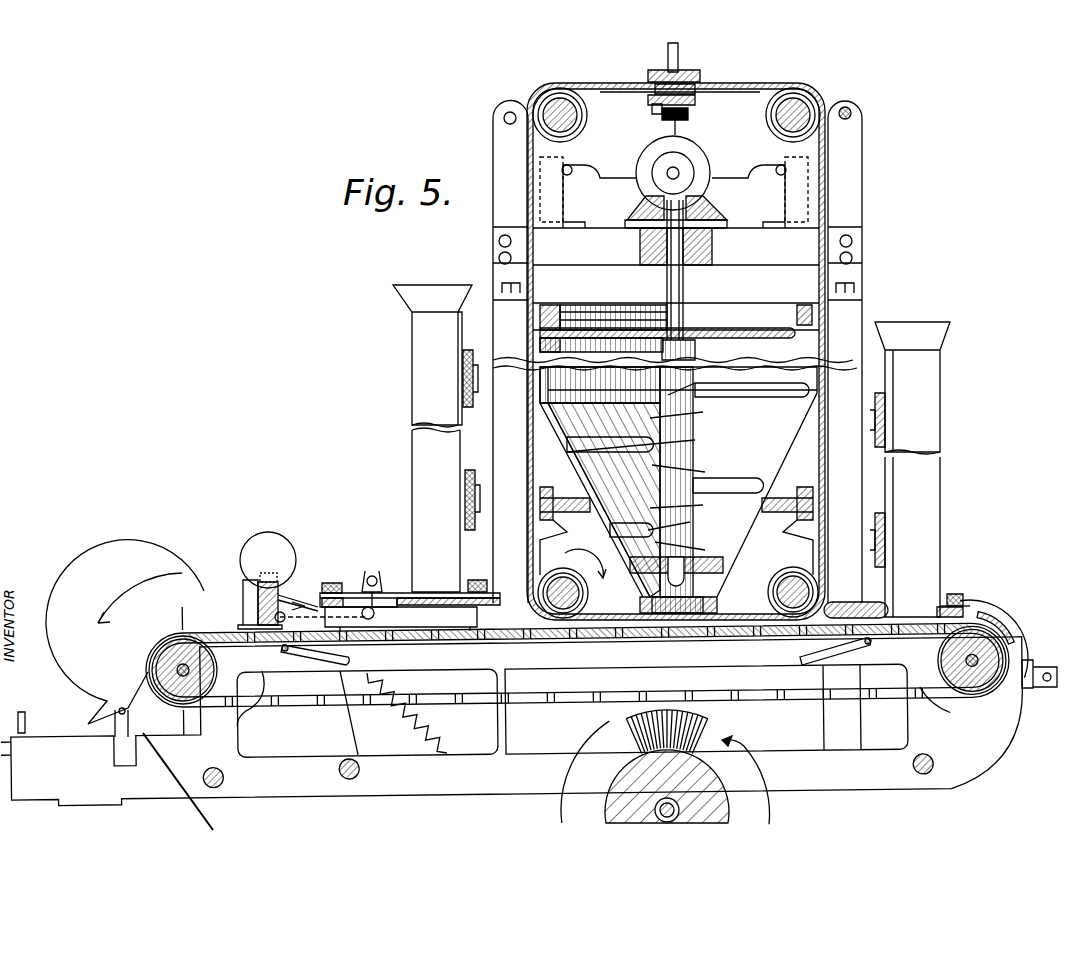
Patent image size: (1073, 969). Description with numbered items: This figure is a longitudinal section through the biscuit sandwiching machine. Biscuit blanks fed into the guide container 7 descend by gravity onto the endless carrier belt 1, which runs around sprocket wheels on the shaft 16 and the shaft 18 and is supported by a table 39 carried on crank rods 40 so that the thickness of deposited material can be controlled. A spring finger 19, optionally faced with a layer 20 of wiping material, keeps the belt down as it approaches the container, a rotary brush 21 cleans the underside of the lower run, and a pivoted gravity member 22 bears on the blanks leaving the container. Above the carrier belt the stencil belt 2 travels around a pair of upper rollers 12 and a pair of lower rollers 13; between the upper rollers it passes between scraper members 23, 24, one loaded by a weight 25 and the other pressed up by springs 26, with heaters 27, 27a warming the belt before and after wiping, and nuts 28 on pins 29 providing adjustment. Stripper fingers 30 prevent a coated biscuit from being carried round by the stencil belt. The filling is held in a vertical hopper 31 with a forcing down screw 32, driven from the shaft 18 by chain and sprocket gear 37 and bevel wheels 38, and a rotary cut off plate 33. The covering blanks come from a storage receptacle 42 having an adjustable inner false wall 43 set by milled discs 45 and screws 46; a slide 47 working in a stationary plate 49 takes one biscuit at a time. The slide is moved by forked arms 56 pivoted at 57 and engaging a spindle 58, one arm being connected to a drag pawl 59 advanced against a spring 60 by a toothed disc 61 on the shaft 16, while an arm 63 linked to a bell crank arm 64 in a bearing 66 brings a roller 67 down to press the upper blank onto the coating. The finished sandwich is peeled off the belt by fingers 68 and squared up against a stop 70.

The carrier belt 1 is at (562, 700).
The stencil belt 2 is at (533, 408).
The guide container 7 is at (940, 386).
The upper rollers 12 is at (580, 92).
The lower rollers 13 is at (588, 600).
The shaft 16 is at (180, 645).
The shaft 18 is at (990, 665).
The spring finger 19 is at (995, 618).
The layer of wiping material 20 is at (998, 632).
The rotary brush 21 is at (728, 733).
The pivoted gravity member 22 is at (845, 600).
The scraper member 23 is at (735, 97).
The scraper member 24 is at (695, 100).
The weight 25 is at (700, 76).
The springs 26 is at (652, 112).
The heater 27 is at (565, 207).
The heater 27a is at (788, 208).
The nuts 28 is at (688, 120).
The pins 29 is at (682, 54).
The stripper fingers 30 is at (578, 665).
The vertical hopper 31 is at (535, 348).
The forcing down screw or paddle arrangement 32 is at (738, 396).
The rotary cut off plate or hit and miss device 33 is at (714, 558).
The chain and sprocket gear 37 is at (984, 602).
The bevel wheels 38 is at (704, 198).
The table 39 is at (776, 645).
The crank rods 40 is at (320, 665).
The storage receptacle 42 is at (436, 510).
The inner false wall 43 is at (460, 376).
The milled discs 45 is at (470, 410).
The screws 46 is at (465, 500).
The slide 47 is at (357, 585).
The stationary plate 49 is at (401, 618).
The forked arms 56 is at (352, 718).
The pivot 57 is at (338, 771).
The spindle 58 is at (375, 577).
The drag pawl 59 is at (305, 600).
The spring 60 is at (430, 712).
The toothed disc 61 is at (198, 586).
The arm 63 is at (343, 617).
The bell crank arm 64 is at (243, 620).
The bearing 66 is at (292, 586).
The roller 67 is at (270, 534).
The fingers 68 is at (140, 672).
The stop 70 is at (30, 706).